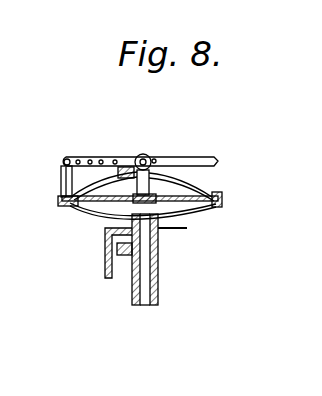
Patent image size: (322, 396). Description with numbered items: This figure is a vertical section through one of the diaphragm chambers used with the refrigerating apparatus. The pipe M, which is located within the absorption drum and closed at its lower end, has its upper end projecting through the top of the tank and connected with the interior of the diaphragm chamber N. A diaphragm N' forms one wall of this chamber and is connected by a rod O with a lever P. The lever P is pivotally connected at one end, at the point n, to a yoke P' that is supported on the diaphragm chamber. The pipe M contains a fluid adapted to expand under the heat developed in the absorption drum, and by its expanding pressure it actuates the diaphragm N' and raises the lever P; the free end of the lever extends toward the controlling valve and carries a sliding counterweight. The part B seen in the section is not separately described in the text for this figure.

The pin n is at (62, 157).
The lever P is at (143, 146).
The yoke P' is at (120, 184).
The rod O is at (152, 170).
The diaphragm chamber N is at (131, 211).
The diaphragm N' is at (196, 181).
The bracket B is at (106, 270).
The pipe M is at (158, 283).